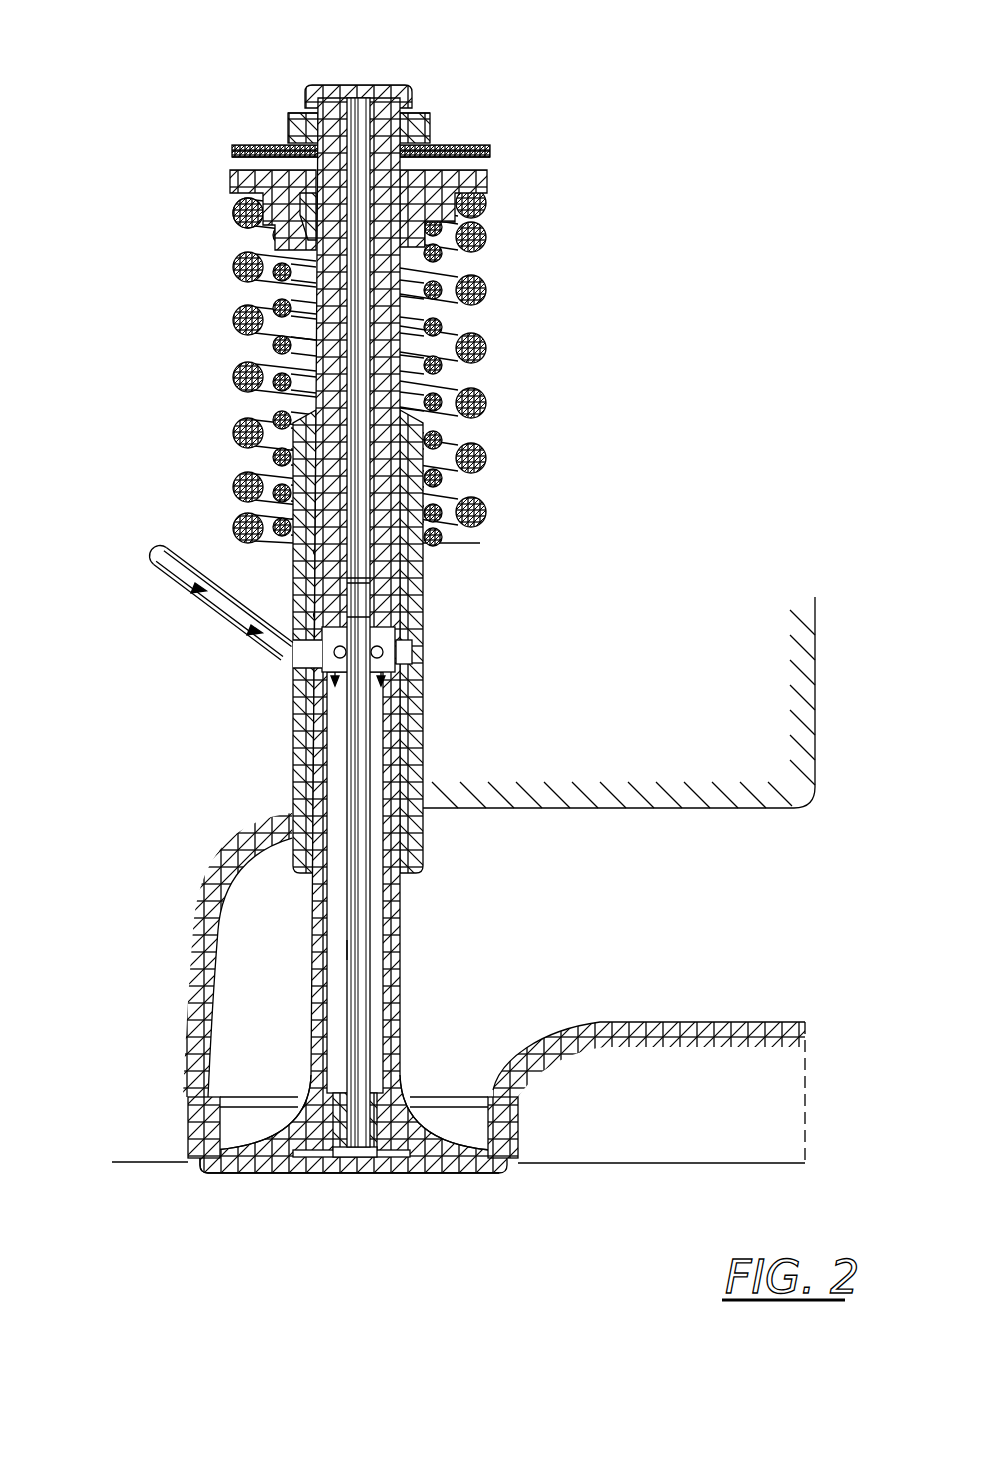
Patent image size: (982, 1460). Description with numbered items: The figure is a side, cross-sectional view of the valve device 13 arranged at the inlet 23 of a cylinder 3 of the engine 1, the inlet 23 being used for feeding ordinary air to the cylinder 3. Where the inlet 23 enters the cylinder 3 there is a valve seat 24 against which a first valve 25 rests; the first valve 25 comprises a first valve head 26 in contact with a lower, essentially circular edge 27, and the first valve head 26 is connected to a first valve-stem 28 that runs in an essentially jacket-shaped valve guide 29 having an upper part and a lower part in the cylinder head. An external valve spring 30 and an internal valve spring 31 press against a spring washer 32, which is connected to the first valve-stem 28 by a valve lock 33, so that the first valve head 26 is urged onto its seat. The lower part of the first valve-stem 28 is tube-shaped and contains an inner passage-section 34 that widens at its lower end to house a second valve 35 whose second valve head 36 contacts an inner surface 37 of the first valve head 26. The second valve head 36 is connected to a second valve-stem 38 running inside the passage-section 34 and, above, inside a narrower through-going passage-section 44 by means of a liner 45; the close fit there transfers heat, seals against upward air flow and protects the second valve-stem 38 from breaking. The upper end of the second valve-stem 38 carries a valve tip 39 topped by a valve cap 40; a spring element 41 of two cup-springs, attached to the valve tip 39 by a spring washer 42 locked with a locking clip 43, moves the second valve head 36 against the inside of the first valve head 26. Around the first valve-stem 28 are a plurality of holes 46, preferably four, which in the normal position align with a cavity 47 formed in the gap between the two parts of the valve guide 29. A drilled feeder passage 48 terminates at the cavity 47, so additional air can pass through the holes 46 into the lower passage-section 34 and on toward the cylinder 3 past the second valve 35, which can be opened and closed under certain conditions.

The engine 1 is at (808, 668).
The cylinder 3 is at (172, 1181).
The valve device 13 is at (660, 128).
The inlet 23 is at (764, 855).
The valve seat 24 is at (518, 1120).
The first valve 25 is at (208, 1185).
The first valve head 26 is at (468, 1163).
The lower, essentially circular edge 27 is at (522, 1120).
The first valve-stem 28 is at (404, 961).
The valve guide 29 is at (425, 599).
The external valve spring 30 is at (408, 292).
The internal valve spring 31 is at (422, 322).
The spring washer 32 is at (480, 176).
The valve lock 33 is at (300, 163).
The inner passage-section 34 is at (330, 950).
The second valve 35 is at (308, 1172).
The second valve head 36 is at (393, 1160).
The inner surface 37 is at (262, 1173).
The second valve-stem 38 is at (360, 1025).
The valve tip 39 is at (424, 105).
The valve cap 40 is at (383, 85).
The spring element 41 is at (478, 157).
The spring washer 42 is at (470, 145).
The locking clip 43 is at (430, 122).
The through-going passage-section 44 is at (352, 548).
The liner 45 is at (240, 213).
The holes 46 is at (292, 668).
The cavity 47 is at (290, 628).
The feeder passage 48 is at (220, 608).